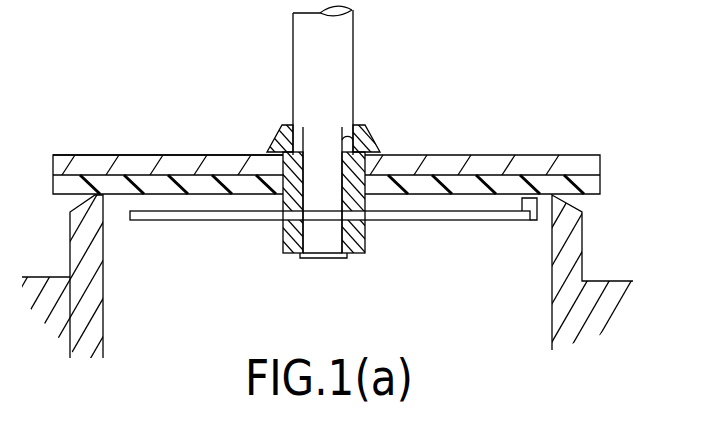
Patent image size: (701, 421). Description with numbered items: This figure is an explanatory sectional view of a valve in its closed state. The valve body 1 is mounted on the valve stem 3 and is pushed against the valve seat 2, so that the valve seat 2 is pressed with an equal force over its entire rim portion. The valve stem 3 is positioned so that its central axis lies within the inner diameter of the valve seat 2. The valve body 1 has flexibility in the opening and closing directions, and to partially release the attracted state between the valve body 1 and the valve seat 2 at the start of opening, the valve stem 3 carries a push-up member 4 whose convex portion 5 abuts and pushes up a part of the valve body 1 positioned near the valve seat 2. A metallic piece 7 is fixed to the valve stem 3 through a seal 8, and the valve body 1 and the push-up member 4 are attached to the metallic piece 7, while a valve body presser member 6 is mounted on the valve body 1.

The valve body 1 is at (348, 181).
The valve seat 2 is at (350, 265).
The valve stem 3 is at (339, 132).
The push-up member 4 is at (330, 241).
The convex portion 5 is at (527, 200).
The valve body presser member 6 is at (325, 136).
The metallic piece 7 is at (328, 189).
The seal 8 is at (350, 135).